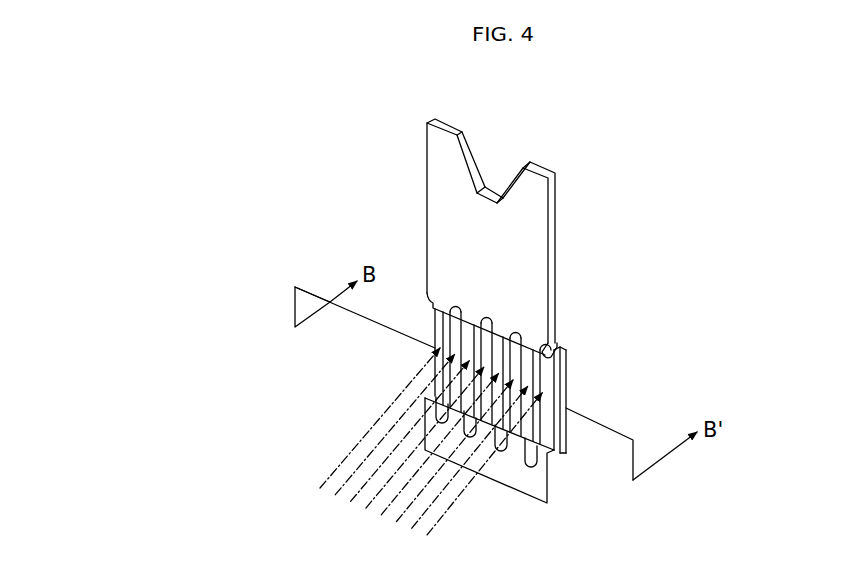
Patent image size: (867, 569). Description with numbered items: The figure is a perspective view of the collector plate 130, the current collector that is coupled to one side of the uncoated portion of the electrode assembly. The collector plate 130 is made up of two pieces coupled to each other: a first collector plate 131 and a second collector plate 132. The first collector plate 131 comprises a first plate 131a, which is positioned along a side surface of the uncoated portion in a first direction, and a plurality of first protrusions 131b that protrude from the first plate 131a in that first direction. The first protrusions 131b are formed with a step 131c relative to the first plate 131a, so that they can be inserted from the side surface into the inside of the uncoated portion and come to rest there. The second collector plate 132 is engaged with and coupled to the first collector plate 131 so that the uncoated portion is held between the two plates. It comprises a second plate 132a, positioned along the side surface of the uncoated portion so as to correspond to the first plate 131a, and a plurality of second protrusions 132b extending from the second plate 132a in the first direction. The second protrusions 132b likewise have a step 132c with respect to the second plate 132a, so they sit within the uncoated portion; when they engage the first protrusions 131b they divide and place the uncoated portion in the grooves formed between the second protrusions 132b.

The collector plate 130 is at (598, 147).
The first collector plate 131 is at (400, 167).
The first plate 131a is at (440, 217).
The first protrusions 131b is at (556, 346).
The step 131c is at (437, 313).
The second collector plate 132 is at (495, 488).
The second plate 132a is at (529, 488).
The second protrusions 132b is at (530, 369).
The step 132c is at (425, 393).